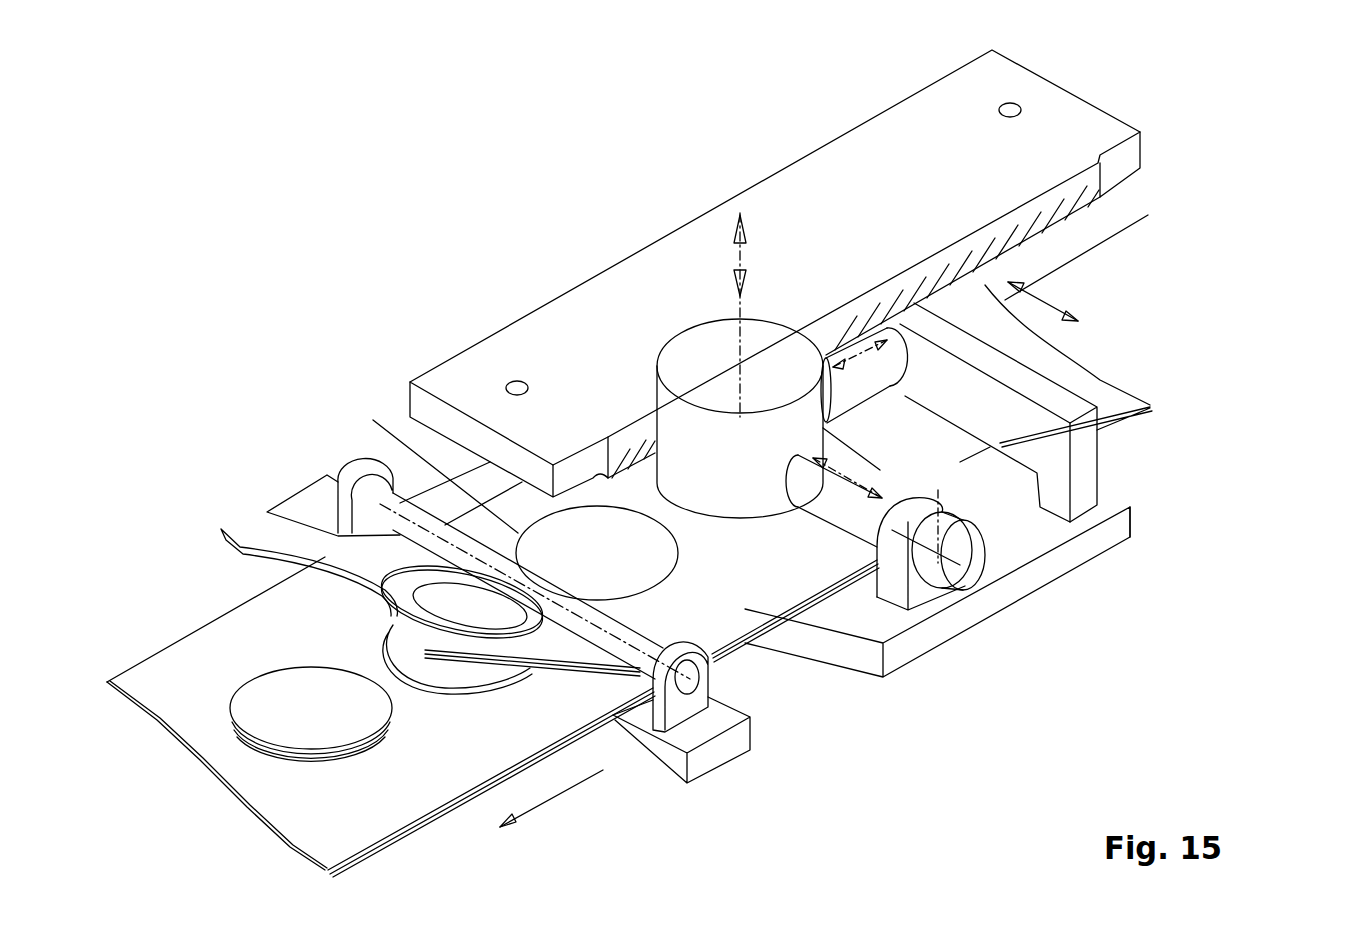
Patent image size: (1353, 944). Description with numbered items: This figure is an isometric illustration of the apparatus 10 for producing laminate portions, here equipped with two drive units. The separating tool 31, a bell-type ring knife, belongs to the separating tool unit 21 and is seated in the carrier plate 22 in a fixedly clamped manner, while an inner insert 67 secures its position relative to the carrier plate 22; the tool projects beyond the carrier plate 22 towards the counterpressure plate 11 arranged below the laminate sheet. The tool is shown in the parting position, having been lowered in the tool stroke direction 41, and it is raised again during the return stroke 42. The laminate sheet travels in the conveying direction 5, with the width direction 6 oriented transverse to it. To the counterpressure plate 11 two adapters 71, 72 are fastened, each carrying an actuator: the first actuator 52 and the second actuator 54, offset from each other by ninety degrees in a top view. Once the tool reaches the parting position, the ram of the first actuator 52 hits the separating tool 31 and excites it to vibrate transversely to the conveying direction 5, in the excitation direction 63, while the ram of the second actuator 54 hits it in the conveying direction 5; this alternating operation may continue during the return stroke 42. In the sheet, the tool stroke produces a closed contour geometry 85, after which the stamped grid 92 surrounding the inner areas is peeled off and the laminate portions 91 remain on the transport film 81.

The conveying direction 5 is at (552, 805).
The width direction 6 is at (1040, 298).
The apparatus 10 is at (1143, 517).
The counterpressure plate 11 is at (1107, 505).
The separating tool unit 21 is at (465, 332).
The carrier plate 22 is at (870, 207).
The separating tool 31 is at (687, 333).
The tool stroke direction 41 is at (738, 263).
The return stroke 42 is at (745, 222).
The first actuator 52 is at (805, 493).
The second actuator 54 is at (952, 298).
The excitation direction 63 is at (835, 470).
The inner insert 67 is at (687, 367).
The adapter 71 is at (902, 600).
The adapter 72 is at (1027, 382).
The transport film 81 is at (593, 700).
The contour geometry 85 is at (445, 478).
The laminate portions 91 is at (272, 712).
The stamped grid 92 is at (311, 548).